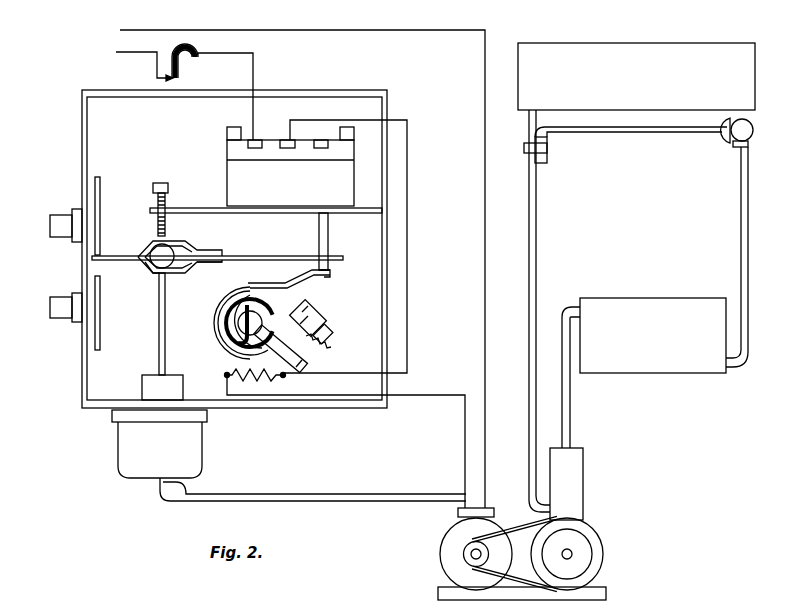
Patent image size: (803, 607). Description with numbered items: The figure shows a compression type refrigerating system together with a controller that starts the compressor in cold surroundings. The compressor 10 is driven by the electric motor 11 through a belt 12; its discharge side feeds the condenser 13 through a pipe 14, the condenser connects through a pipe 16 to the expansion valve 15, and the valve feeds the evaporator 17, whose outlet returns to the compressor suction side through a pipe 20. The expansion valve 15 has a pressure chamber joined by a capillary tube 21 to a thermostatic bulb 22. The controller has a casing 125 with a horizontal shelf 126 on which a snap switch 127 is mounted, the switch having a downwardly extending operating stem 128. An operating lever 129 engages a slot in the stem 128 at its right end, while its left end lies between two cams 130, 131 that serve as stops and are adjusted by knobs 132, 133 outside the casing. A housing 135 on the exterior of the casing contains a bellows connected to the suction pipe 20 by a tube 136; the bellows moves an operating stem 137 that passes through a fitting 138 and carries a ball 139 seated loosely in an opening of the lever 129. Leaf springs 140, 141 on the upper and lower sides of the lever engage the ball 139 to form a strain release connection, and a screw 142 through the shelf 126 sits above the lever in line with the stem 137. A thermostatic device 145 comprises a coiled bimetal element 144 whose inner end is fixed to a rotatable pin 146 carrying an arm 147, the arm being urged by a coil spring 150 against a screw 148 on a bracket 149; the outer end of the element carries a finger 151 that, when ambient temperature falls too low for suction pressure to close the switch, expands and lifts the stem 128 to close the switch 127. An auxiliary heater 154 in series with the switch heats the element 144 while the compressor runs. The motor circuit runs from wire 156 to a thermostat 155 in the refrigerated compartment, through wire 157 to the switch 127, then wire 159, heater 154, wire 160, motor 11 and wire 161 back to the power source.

The compressor 10 is at (570, 486).
The electric motor 11 is at (448, 544).
The belt 12 is at (515, 530).
The condenser 13 is at (660, 352).
The pipe 14 is at (571, 410).
The expansion valve 15 is at (720, 148).
The pipe 16 is at (749, 258).
The evaporator 17 is at (647, 85).
The suction pipe 20 is at (537, 268).
The capillary tube 21 is at (637, 131).
The thermostatic bulb 22 is at (546, 158).
The casing 125 is at (386, 89).
The horizontal shelf 126 is at (200, 207).
The snap switch 127 is at (313, 189).
The operating stem 128 is at (329, 235).
The operating lever 129 is at (255, 255).
The cam 130 is at (101, 186).
The cam 131 is at (101, 336).
The knob 132 is at (60, 215).
The knob 133 is at (60, 297).
The housing 135 is at (190, 438).
The tube 136 is at (342, 493).
The operating stem 137 is at (166, 306).
The fitting 138 is at (142, 383).
The ball 139 is at (150, 268).
The leaf spring 140 is at (150, 246).
The leaf spring 141 is at (180, 275).
The screw 142 is at (162, 183).
The coiled bimetal element 144 is at (214, 323).
The thermostatic device 145 is at (212, 351).
The rotatable pin 146 is at (262, 306).
The arm 147 is at (306, 368).
The screw 148 is at (312, 305).
The bracket 149 is at (318, 316).
The coil spring 150 is at (328, 344).
The finger 151 is at (333, 278).
The auxiliary heater 154 is at (227, 372).
The thermostat 155 is at (190, 65).
The wire 156 is at (146, 55).
The wire 157 is at (256, 65).
The wire 159 is at (408, 248).
The wire 160 is at (463, 427).
The wire 161 is at (486, 318).